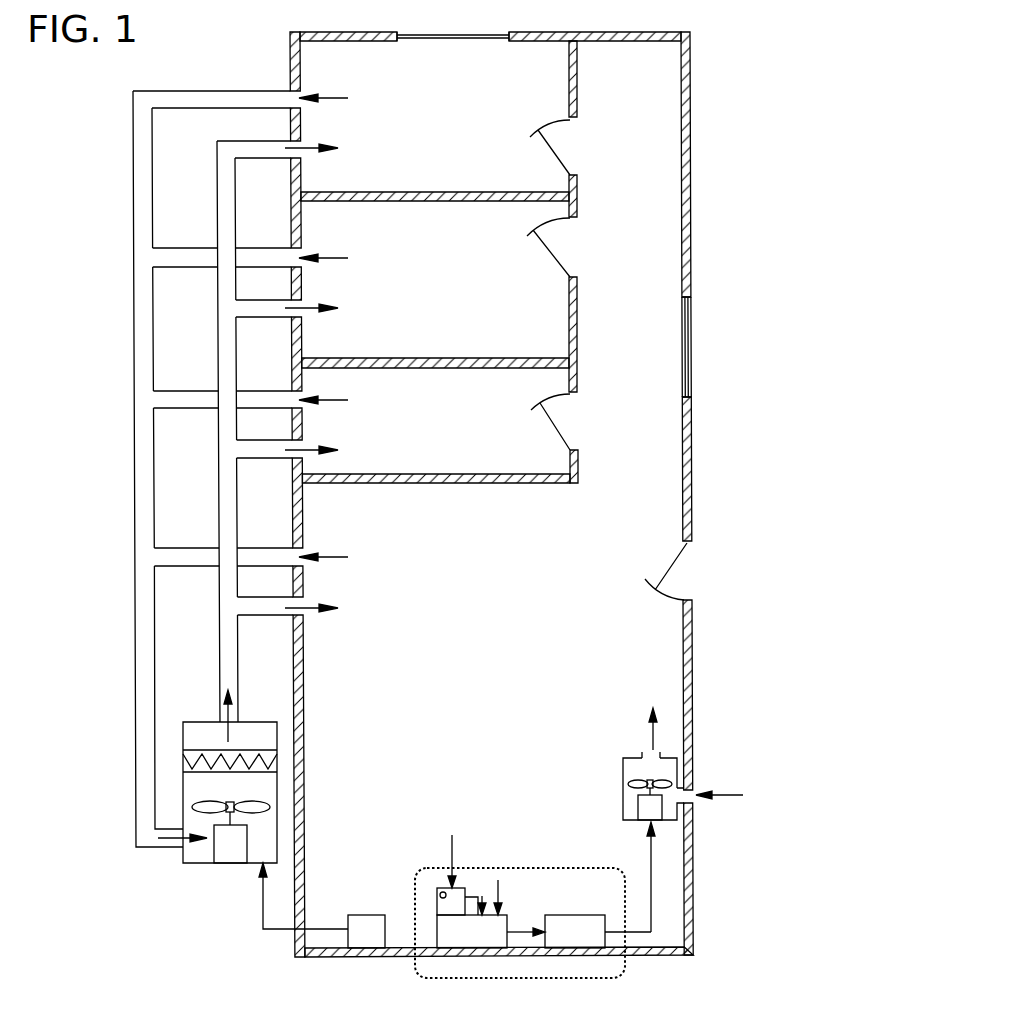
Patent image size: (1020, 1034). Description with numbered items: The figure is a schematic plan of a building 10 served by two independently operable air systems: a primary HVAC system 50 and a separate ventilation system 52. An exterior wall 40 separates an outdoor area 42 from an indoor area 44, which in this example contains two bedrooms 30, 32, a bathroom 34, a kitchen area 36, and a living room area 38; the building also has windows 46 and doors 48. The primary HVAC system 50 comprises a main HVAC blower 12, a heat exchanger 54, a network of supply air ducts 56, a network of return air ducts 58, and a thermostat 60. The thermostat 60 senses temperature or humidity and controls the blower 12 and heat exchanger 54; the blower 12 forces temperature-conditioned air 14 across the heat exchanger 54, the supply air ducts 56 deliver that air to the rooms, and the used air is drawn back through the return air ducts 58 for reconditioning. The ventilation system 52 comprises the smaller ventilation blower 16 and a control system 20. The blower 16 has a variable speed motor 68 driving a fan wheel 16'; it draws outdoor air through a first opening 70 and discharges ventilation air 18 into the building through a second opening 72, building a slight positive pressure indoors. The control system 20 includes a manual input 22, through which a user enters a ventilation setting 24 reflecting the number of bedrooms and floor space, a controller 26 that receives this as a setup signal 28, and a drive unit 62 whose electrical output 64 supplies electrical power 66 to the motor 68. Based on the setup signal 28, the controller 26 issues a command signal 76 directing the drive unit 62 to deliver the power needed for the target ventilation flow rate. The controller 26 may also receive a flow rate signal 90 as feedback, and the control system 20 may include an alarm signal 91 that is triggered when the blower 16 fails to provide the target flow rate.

The building 10 is at (745, 160).
The main HVAC blower 12 is at (263, 806).
The temperature-conditioned air 14 is at (225, 736).
The ventilation blower 16 is at (685, 789).
The fan wheel 16' is at (613, 777).
The ventilation air 18 is at (648, 722).
The control system 20 is at (507, 980).
The manual input 22 is at (435, 900).
The ventilation setting 24 is at (451, 853).
The controller 26 is at (437, 932).
The setup signal 28 is at (482, 896).
The bedroom 30 is at (420, 141).
The bedroom 32 is at (420, 310).
The bathroom 34 is at (427, 449).
The kitchen area 36 is at (448, 595).
The living room area 38 is at (448, 738).
The exterior wall 40 is at (695, 498).
The outdoor area 42 is at (734, 372).
The indoor area 44 is at (622, 372).
The windows 46 is at (433, 43).
The doors 48 is at (555, 149).
The primary HVAC system 50 is at (204, 905).
The ventilation system 52 is at (610, 712).
The heat exchanger 54 is at (263, 751).
The supply air ducts 56 is at (217, 513).
The return air ducts 58 is at (133, 454).
The thermostat 60 is at (347, 920).
The drive unit 62 is at (555, 915).
The electrical output 64 is at (606, 930).
The electrical power 66 is at (652, 900).
The motor 68 is at (638, 808).
The first opening 70 is at (693, 800).
The second opening 72 is at (645, 756).
The command signal 76 is at (521, 933).
The flow rate signal 90 is at (500, 888).
The alarm signal 91 is at (437, 889).